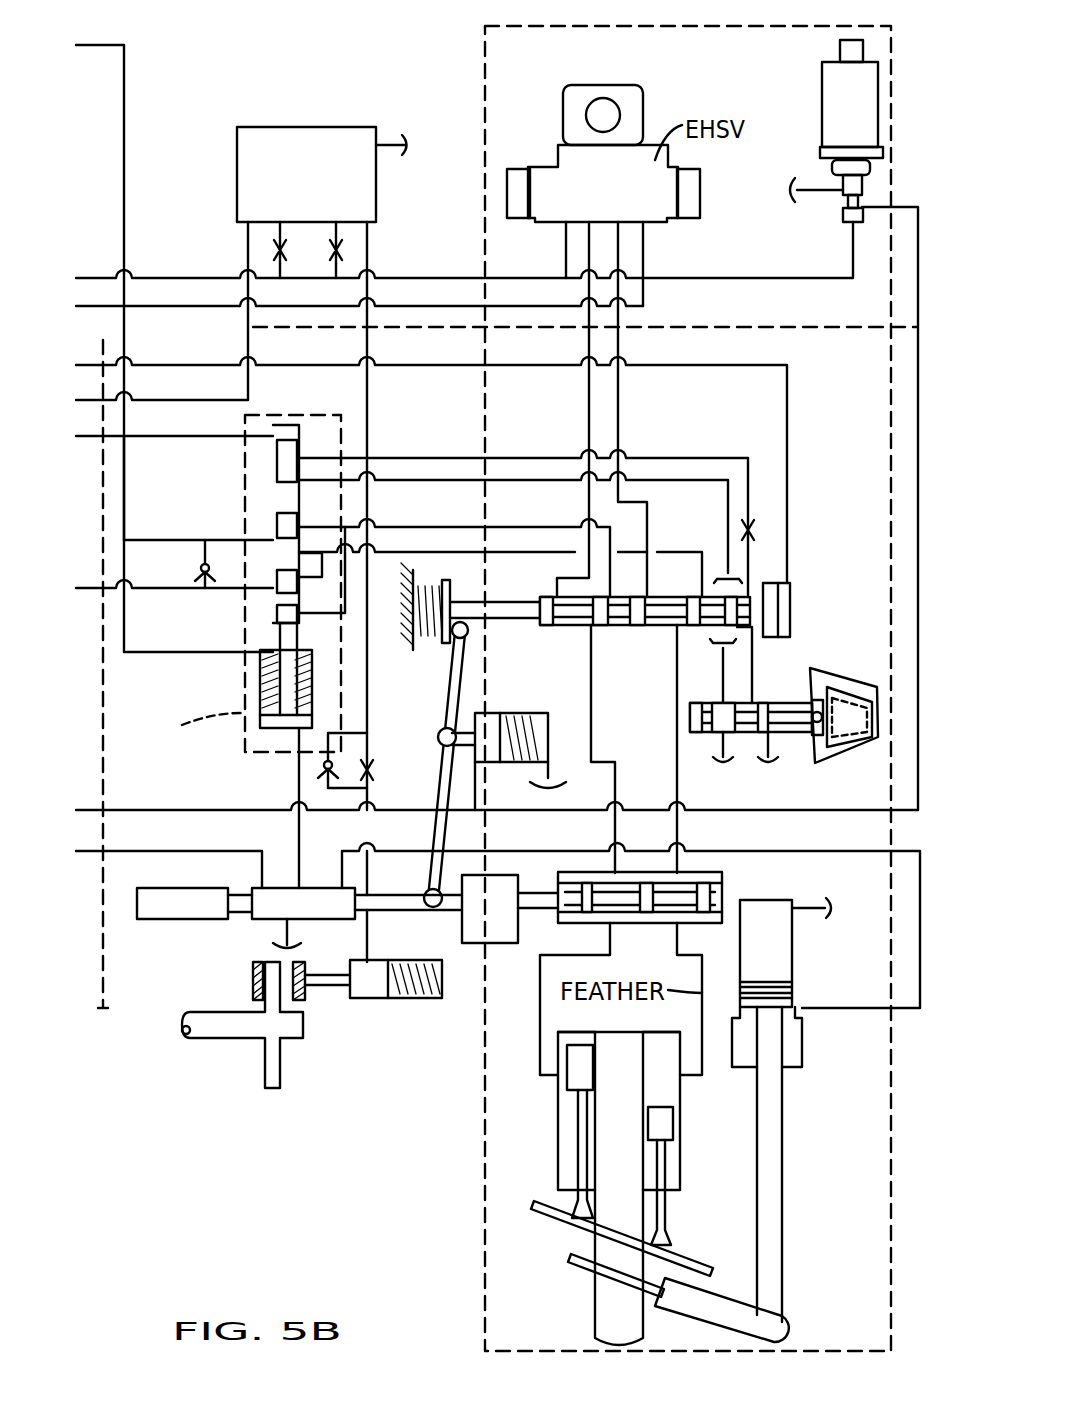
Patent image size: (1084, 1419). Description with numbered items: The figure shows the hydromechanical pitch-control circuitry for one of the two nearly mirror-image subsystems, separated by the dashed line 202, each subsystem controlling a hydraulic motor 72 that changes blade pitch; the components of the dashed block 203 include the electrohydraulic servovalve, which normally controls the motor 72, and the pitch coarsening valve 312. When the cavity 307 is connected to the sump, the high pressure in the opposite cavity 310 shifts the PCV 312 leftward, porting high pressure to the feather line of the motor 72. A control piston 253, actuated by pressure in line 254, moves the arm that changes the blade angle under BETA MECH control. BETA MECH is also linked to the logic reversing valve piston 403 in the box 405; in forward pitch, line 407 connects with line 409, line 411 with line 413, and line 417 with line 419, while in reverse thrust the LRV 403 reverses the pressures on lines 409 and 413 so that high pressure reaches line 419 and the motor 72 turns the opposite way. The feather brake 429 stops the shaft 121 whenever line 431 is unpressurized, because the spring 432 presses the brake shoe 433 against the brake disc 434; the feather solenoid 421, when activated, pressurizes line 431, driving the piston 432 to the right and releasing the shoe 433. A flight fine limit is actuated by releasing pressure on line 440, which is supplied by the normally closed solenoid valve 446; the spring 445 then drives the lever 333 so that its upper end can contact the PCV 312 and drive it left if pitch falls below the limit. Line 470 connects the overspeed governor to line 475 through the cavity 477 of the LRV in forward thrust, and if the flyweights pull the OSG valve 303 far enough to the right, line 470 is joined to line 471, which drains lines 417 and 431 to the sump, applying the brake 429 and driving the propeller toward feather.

The hydraulic motor 72 is at (558, 1147).
The shaft 121 is at (232, 1038).
The dashed line 202 is at (108, 975).
The block 203 is at (485, 1283).
The control piston 253 is at (780, 983).
The line 254 is at (817, 1010).
The OSG valve 303 is at (723, 724).
The cavity 307 is at (758, 583).
The cavity 310 is at (780, 592).
The pitch coarsening valve (PCV) 312 is at (638, 625).
The lever 333 is at (436, 790).
The logic reversing valve (LRV) piston 403 is at (272, 728).
The box 405 is at (245, 449).
The line 407 is at (138, 588).
The line 409 is at (455, 555).
The line 411 is at (135, 540).
The line 413 is at (407, 527).
The line 417 is at (370, 392).
The line 419 is at (398, 478).
The feather solenoid 421 is at (318, 127).
The brake 429 is at (236, 970).
The line 431 is at (372, 250).
The spring / piston 432 is at (420, 996).
The brake shoe 433 is at (305, 998).
The brake disc 434 is at (284, 1058).
The line 440 is at (918, 772).
The spring 445 is at (552, 683).
The solenoid valve 446 is at (840, 78).
The line 470 is at (730, 662).
The line 471 is at (735, 740).
The line 475 is at (660, 457).
The cavity 477 is at (305, 450).